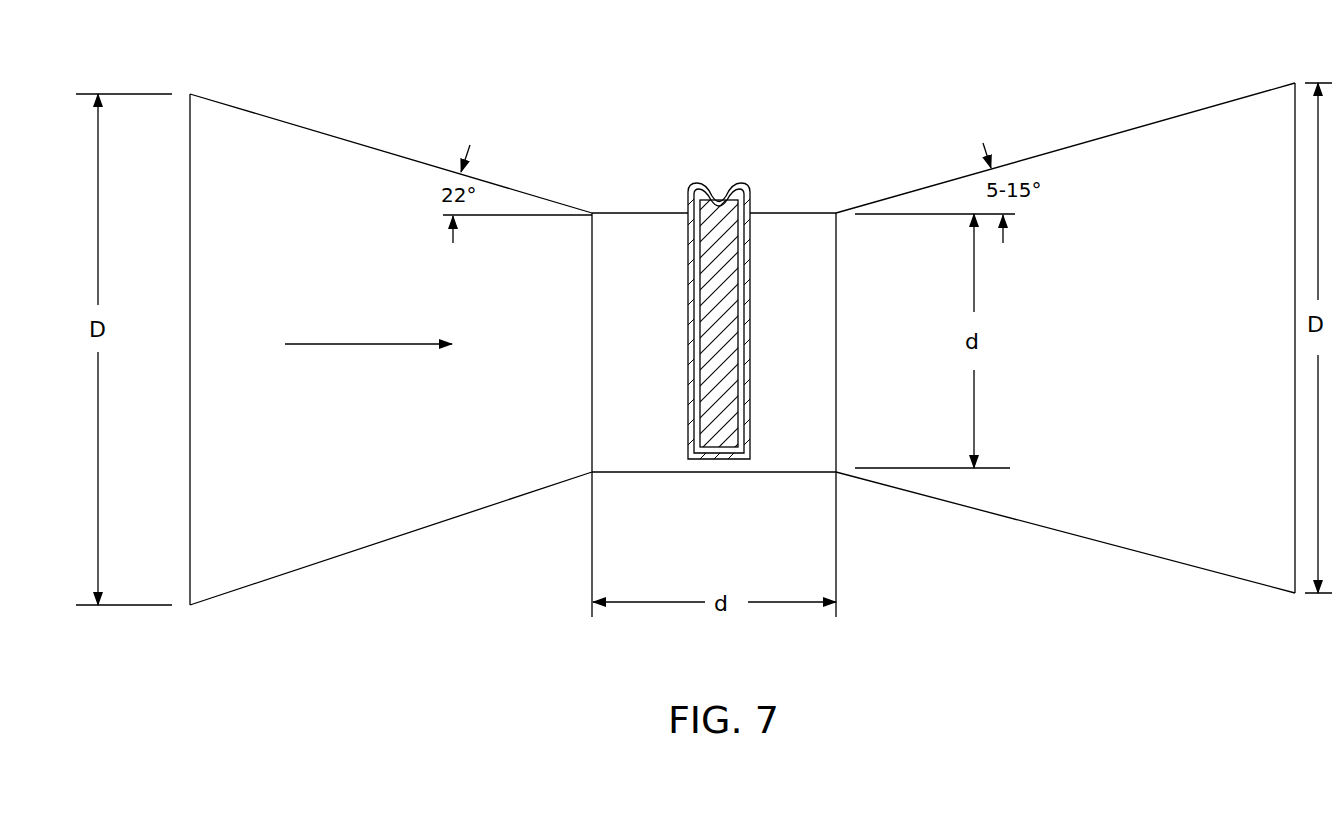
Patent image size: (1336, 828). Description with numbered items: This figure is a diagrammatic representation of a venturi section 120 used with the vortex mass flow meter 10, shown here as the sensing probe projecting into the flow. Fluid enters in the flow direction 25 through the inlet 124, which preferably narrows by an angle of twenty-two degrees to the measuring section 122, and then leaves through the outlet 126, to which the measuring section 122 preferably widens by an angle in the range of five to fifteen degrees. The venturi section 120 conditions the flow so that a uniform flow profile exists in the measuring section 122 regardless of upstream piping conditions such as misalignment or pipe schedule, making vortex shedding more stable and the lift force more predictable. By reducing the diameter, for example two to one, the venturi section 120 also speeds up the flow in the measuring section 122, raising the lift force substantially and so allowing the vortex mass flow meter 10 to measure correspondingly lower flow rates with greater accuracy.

The vortex mass flow meter 10 is at (773, 358).
The flow direction 25 is at (350, 343).
The venturi section 120 is at (958, 93).
The measuring section 122 is at (786, 212).
The inlet 124 is at (165, 273).
The outlet 126 is at (1263, 273).